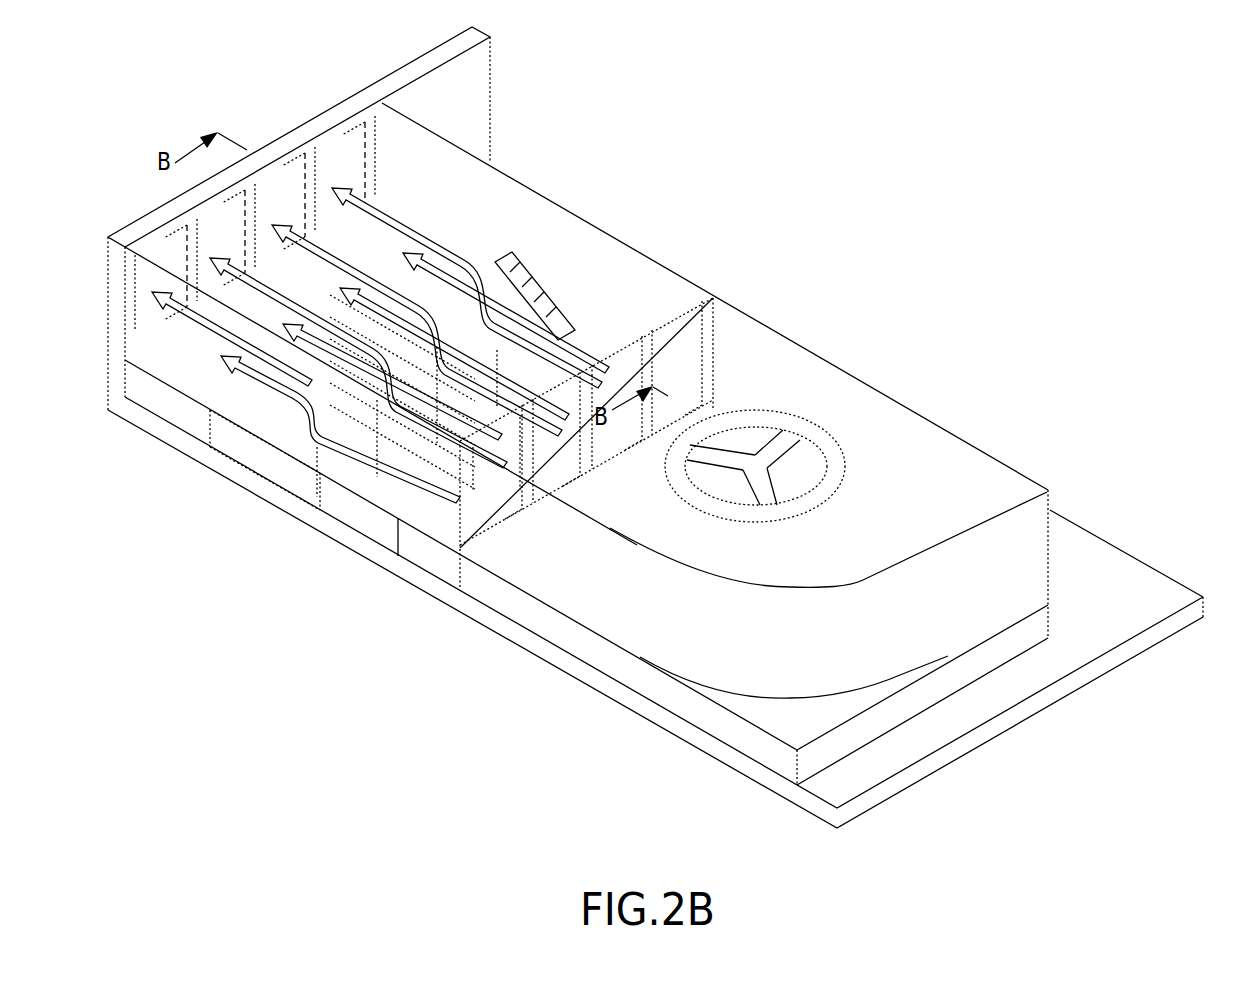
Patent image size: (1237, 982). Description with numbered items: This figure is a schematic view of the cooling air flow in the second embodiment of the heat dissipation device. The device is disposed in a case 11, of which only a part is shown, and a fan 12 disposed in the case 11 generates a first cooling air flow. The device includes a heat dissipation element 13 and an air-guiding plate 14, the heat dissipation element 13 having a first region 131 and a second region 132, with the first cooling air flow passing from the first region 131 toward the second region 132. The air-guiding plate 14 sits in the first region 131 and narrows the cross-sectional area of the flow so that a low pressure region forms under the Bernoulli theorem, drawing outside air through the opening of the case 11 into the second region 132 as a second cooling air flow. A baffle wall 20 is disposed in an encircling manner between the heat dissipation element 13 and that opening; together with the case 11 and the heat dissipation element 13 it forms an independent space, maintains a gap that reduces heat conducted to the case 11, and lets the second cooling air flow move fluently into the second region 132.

The case 11 is at (410, 117).
The fan 12 is at (875, 393).
The heat dissipation element 13 is at (547, 198).
The first region 131 is at (580, 247).
The second region 132 is at (462, 181).
The air-guiding plate 14 is at (550, 310).
The baffle wall 20 is at (253, 452).